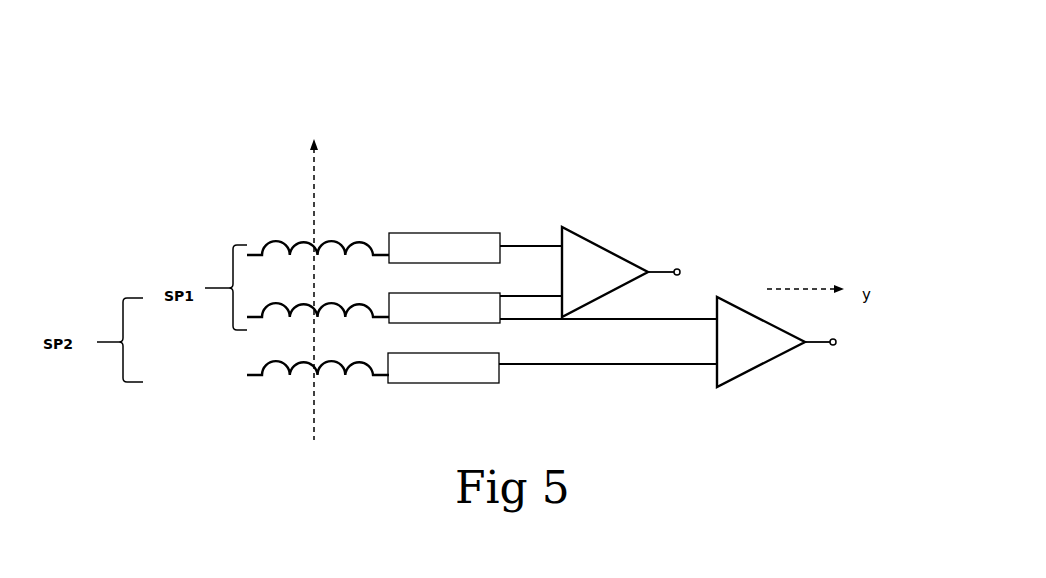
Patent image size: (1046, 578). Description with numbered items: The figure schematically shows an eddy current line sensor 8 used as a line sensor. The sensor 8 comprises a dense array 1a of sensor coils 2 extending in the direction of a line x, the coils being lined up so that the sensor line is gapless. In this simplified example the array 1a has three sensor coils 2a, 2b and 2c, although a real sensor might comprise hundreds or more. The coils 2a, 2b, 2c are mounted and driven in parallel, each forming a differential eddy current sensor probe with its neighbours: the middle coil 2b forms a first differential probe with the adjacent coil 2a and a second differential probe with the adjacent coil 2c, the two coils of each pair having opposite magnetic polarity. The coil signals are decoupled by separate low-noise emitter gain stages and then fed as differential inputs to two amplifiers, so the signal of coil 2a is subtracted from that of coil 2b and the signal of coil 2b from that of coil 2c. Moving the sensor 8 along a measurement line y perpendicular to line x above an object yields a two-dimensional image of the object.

The sensor coil 2 is at (334, 293).
The sensor coil 2a is at (369, 236).
The sensor coil 2b is at (301, 306).
The sensor coil 2c is at (318, 373).
The array of sensor coils 1a is at (337, 181).
The eddy current line sensor 8 is at (516, 144).